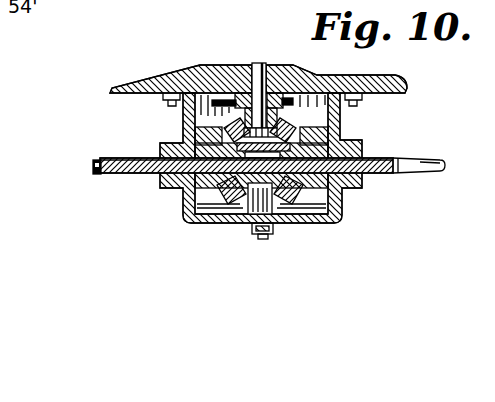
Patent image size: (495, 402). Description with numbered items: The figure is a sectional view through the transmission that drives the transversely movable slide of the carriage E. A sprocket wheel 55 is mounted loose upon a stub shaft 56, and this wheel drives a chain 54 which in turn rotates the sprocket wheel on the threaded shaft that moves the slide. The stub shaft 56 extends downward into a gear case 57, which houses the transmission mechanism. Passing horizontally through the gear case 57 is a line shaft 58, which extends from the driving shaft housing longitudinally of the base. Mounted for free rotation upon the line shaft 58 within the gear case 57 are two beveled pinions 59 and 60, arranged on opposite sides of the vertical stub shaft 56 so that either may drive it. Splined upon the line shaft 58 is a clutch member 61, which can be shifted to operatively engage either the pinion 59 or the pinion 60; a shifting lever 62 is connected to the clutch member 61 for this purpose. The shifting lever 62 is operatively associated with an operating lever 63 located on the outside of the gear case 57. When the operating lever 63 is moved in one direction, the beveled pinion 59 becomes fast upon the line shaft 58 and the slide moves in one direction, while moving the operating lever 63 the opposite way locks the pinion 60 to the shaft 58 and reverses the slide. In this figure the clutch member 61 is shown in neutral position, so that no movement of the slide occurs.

The chain 54 is at (217, 65).
The sprocket wheel 55 is at (236, 98).
The stub shaft 56 is at (262, 66).
The gear case 57 is at (188, 219).
The line shaft 58 is at (405, 173).
The beveled pinion 59 is at (200, 143).
The beveled pinion 60 is at (327, 140).
The clutch member 61 is at (249, 185).
The shifting lever 62 is at (278, 195).
The operating lever 63 is at (252, 236).
The carriage E is at (396, 82).